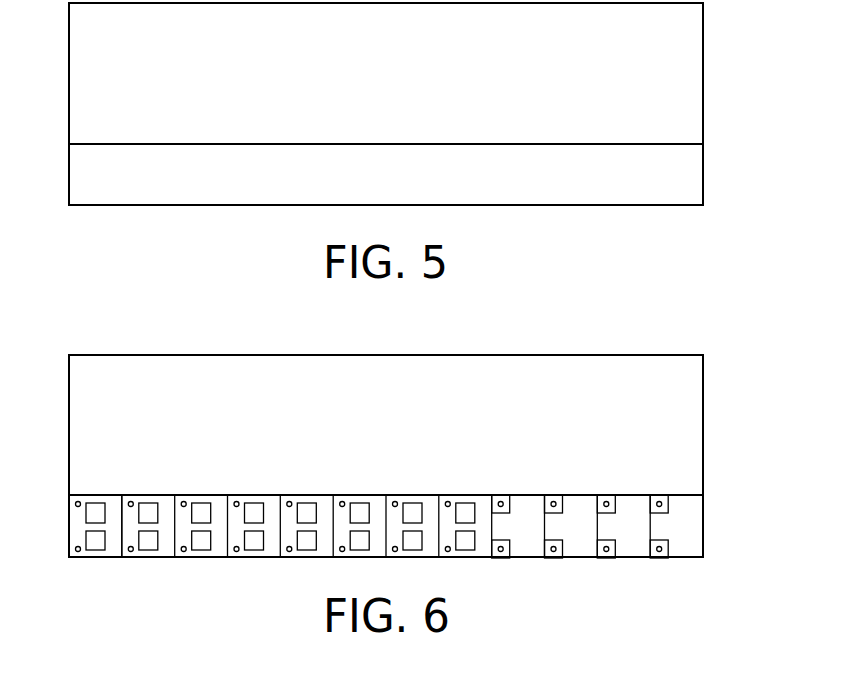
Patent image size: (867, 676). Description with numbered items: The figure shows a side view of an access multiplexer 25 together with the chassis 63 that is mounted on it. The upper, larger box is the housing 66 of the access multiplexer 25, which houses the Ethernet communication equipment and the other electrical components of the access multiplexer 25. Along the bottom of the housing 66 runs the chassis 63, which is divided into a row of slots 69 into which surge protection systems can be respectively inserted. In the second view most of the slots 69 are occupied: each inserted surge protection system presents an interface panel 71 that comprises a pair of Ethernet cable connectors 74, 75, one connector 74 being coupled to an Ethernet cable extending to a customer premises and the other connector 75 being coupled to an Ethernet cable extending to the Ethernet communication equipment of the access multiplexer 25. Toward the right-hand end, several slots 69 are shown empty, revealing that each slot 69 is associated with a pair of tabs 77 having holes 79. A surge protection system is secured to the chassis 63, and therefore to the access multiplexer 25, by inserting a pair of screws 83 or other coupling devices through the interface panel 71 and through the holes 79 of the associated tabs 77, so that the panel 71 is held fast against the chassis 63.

In FIG. 5, the access multiplexer 25 is at (710, 13).
In FIG. 6, the access multiplexer 25 is at (710, 365).
In FIG. 5, the housing 66 is at (704, 115).
In FIG. 6, the housing 66 is at (704, 466).
In FIG. 5, the chassis 63 is at (710, 164).
In FIG. 6, the chassis 63 is at (710, 516).
In FIG. 6, the interface panel 71 is at (111, 505).
In FIG. 6, the Ethernet cable connector 75 is at (92, 503).
In FIG. 6, the Ethernet cable connector 74 is at (98, 551).
In FIG. 6, the screws 83 is at (75, 504).
In FIG. 6, the tabs 77 is at (556, 514).
In FIG. 6, the holes 79 is at (551, 502).
In FIG. 6, the slots 69 is at (586, 501).